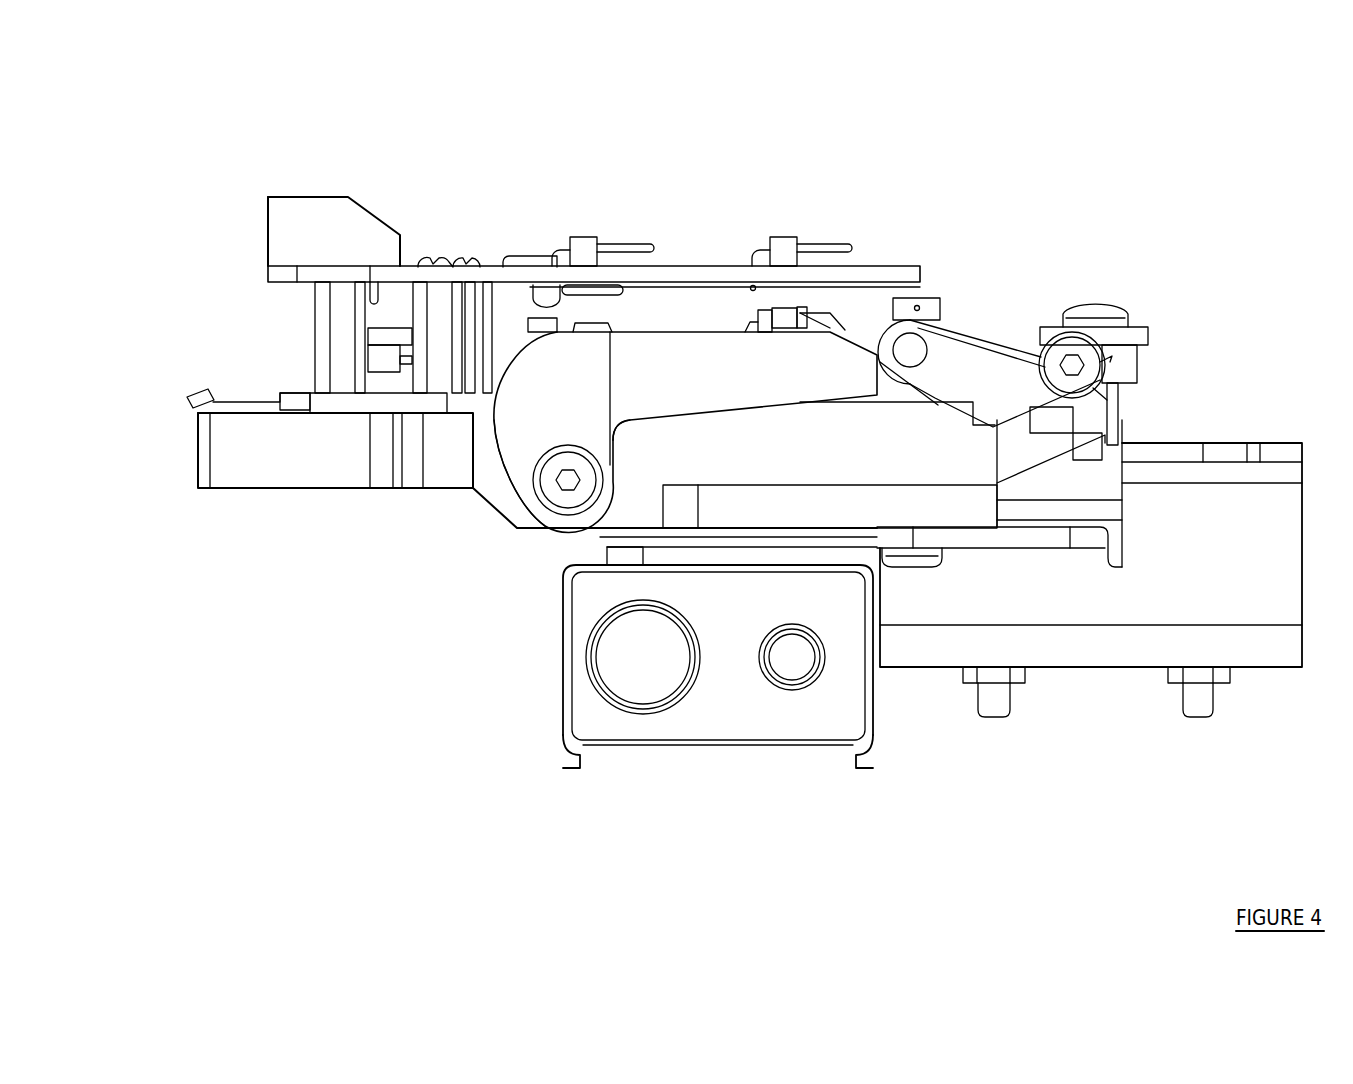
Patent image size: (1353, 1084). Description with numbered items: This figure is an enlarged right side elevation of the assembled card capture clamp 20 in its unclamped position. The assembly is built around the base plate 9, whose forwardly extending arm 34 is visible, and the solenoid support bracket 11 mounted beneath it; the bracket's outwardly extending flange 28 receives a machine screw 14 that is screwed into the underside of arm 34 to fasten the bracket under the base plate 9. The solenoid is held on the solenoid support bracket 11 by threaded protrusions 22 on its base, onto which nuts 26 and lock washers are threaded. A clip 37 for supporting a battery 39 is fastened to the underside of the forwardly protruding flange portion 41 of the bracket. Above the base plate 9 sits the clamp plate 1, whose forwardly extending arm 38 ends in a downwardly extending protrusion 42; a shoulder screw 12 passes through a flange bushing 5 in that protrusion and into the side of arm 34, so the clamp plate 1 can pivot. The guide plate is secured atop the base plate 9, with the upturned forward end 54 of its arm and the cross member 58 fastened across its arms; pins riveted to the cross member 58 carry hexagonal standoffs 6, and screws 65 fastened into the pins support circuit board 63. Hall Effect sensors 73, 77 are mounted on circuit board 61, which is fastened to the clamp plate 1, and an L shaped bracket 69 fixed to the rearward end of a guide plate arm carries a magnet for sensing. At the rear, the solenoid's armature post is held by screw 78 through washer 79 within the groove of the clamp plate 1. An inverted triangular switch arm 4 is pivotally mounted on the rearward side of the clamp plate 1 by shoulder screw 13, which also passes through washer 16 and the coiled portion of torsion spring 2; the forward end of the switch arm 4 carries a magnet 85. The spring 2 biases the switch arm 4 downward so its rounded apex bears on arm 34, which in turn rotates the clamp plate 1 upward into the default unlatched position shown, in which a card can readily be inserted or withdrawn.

The clamp plate 1 is at (1137, 375).
The first torsion spring 2 is at (990, 334).
The switch arm 4 is at (1013, 405).
The flange bushing 5 is at (540, 452).
The hexagonal standoff 6 is at (413, 310).
The base plate 9 is at (470, 507).
The solenoid support bracket 11 is at (1303, 637).
The shoulder screw 12 is at (606, 455).
The shoulder screw 13 is at (1100, 380).
The machine screw 14 is at (928, 568).
The washer 16 is at (1032, 332).
The card capture clamp 20 is at (1152, 232).
The threaded protrusion 22 is at (1012, 706).
The nut 26 is at (955, 680).
The flange 28 is at (1022, 555).
The arm 34 is at (290, 470).
The clip 37 is at (680, 666).
The arm 38 is at (712, 386).
The battery 39 is at (746, 729).
The forwardly protruding flange portion 41 is at (607, 553).
The downwardly extending protrusion 42 is at (566, 398).
The upturned forward end 54 is at (187, 398).
The cross member 58 is at (280, 393).
The circuit board 61 is at (513, 330).
The circuit board 63 is at (872, 263).
The screw 65 is at (467, 253).
The L shaped bracket 69 is at (747, 325).
The Hall Effect sensor 73 is at (918, 295).
The Hall Effect sensor 77 is at (805, 305).
The screw 78 is at (1098, 303).
The washer 79 is at (1148, 337).
The magnet 85 is at (920, 360).